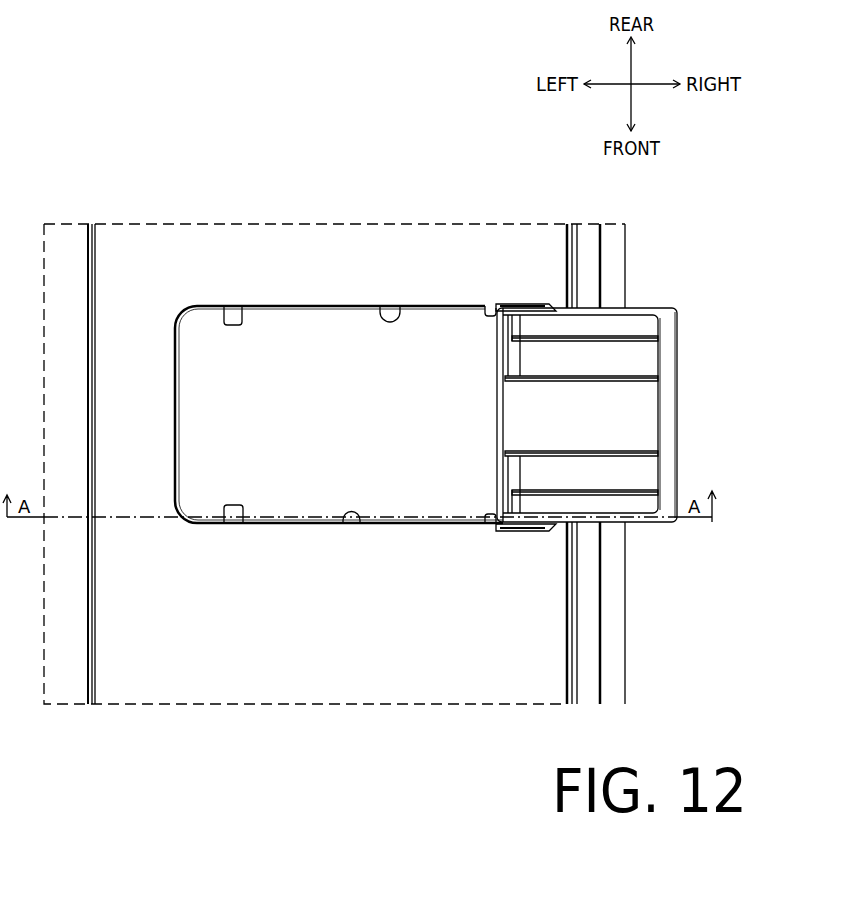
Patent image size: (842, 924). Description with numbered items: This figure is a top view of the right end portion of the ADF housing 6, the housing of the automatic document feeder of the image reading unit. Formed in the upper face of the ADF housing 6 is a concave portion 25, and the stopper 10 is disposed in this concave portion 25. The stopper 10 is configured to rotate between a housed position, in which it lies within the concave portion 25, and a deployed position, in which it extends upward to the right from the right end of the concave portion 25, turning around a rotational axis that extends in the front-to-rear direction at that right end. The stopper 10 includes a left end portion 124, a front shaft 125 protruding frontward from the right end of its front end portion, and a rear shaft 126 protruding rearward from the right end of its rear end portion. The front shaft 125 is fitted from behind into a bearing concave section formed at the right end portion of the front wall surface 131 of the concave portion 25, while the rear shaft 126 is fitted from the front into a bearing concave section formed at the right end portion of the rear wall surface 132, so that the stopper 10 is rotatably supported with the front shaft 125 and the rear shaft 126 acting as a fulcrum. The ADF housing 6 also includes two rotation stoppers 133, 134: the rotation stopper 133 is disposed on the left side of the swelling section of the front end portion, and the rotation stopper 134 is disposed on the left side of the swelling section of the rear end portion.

The ADF housing 6 is at (626, 628).
The stopper 10 is at (626, 415).
The concave portion 25 is at (291, 325).
The left end portion 124 is at (678, 412).
The front shaft 125 is at (525, 531).
The rear shaft 126 is at (528, 305).
The front wall surface 131 is at (352, 524).
The rear wall surface 132 is at (398, 318).
The rotation stopper 133 is at (493, 524).
The rotation stopper 134 is at (490, 306).